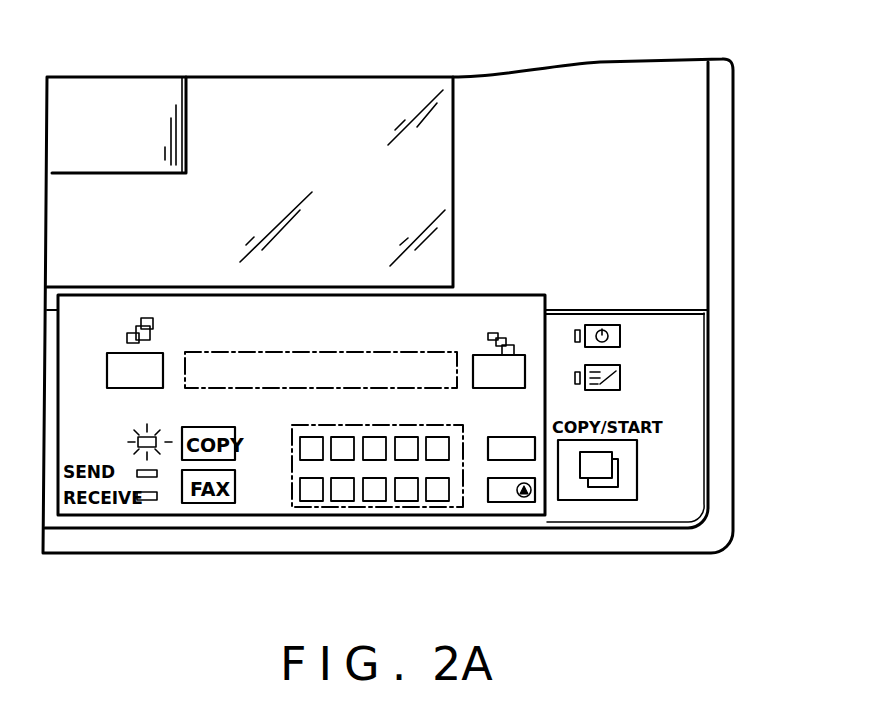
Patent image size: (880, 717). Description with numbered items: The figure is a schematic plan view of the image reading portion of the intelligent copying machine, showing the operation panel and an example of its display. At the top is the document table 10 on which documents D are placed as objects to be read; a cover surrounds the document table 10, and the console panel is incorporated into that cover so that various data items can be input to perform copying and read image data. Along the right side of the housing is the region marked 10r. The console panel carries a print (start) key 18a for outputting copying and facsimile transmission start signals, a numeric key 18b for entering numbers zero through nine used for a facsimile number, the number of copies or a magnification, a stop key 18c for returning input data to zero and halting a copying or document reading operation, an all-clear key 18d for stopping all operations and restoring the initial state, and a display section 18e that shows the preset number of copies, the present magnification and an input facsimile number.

The document D is at (130, 88).
The document table 10 is at (362, 90).
The rounded corner of apparatus body 10r is at (733, 452).
The print (start) key 18a is at (610, 500).
The numeric key 18b is at (355, 507).
The stop key 18c is at (512, 502).
The all-clear key 18d is at (505, 437).
The display section 18e is at (160, 420).